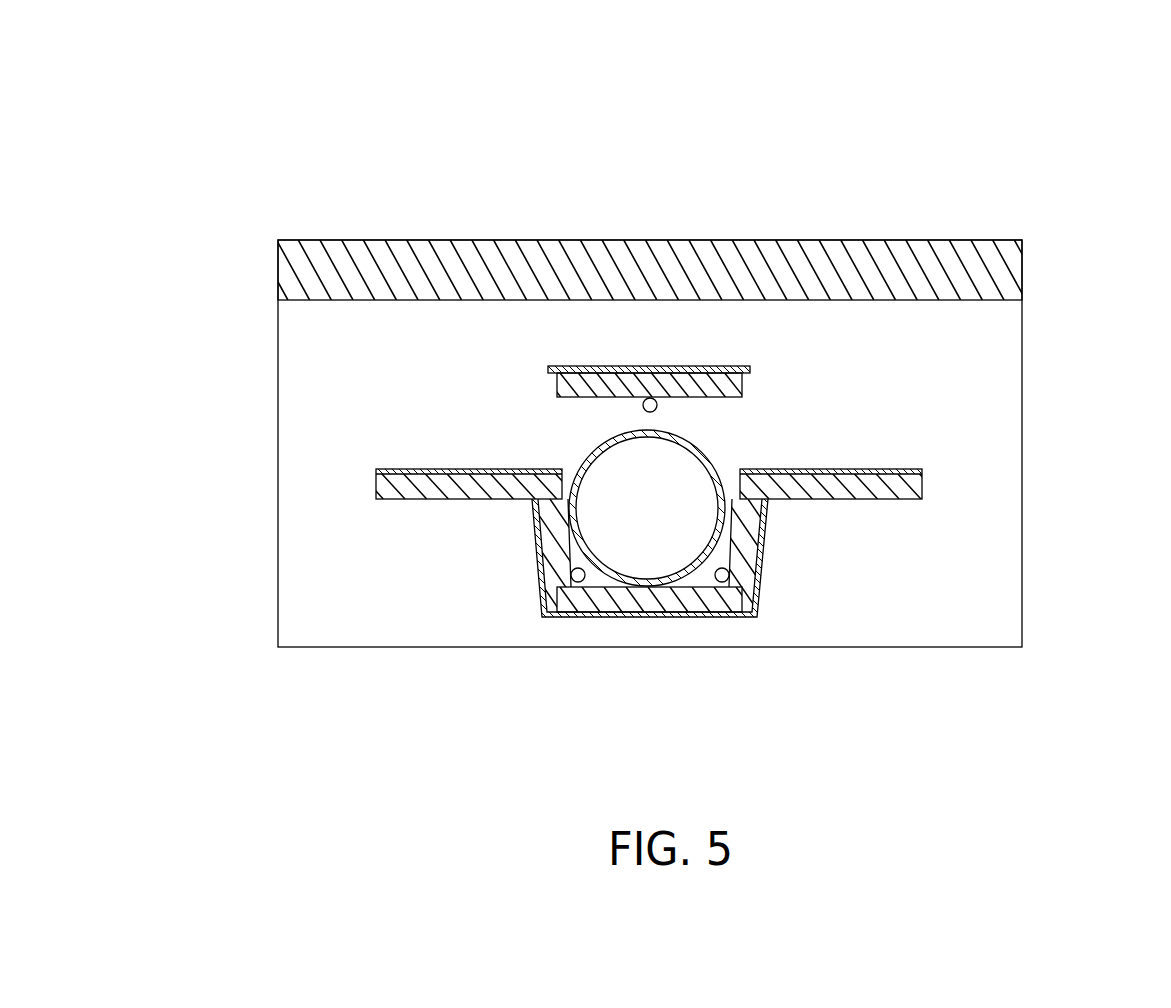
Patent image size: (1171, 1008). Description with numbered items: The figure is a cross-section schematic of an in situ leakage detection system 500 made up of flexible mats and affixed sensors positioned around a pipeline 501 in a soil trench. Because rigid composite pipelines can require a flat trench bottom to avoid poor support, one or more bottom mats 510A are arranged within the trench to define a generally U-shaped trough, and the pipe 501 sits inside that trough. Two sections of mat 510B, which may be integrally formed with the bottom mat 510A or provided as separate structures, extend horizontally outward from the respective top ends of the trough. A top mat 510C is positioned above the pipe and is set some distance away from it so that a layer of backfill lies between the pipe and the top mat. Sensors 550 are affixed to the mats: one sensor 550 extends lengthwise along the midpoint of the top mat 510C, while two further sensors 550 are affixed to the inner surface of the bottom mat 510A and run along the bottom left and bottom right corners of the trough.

The in situ leakage detection system 500 is at (150, 115).
The pipeline 501 is at (593, 450).
The bottom mat 510A is at (727, 600).
The mat sections 510B is at (375, 485).
The top mat 510C is at (667, 367).
The sensors 550 is at (588, 576).